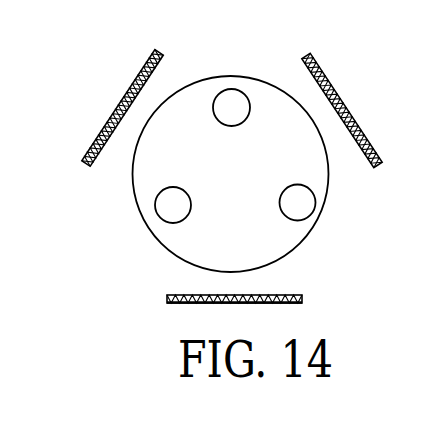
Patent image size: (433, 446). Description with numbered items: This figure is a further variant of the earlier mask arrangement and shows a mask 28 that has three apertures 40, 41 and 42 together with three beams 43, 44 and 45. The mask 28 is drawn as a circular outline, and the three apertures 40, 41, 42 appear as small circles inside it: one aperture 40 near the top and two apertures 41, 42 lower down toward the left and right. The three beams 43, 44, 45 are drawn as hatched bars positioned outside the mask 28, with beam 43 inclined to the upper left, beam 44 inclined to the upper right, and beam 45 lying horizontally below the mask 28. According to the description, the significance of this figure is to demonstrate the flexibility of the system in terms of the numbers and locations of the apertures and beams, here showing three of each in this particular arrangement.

The mask 28 is at (279, 243).
The aperture 40 is at (228, 102).
The aperture 41 is at (172, 203).
The aperture 42 is at (298, 200).
The beam 43 is at (112, 130).
The beam 44 is at (340, 102).
The beam 45 is at (243, 303).